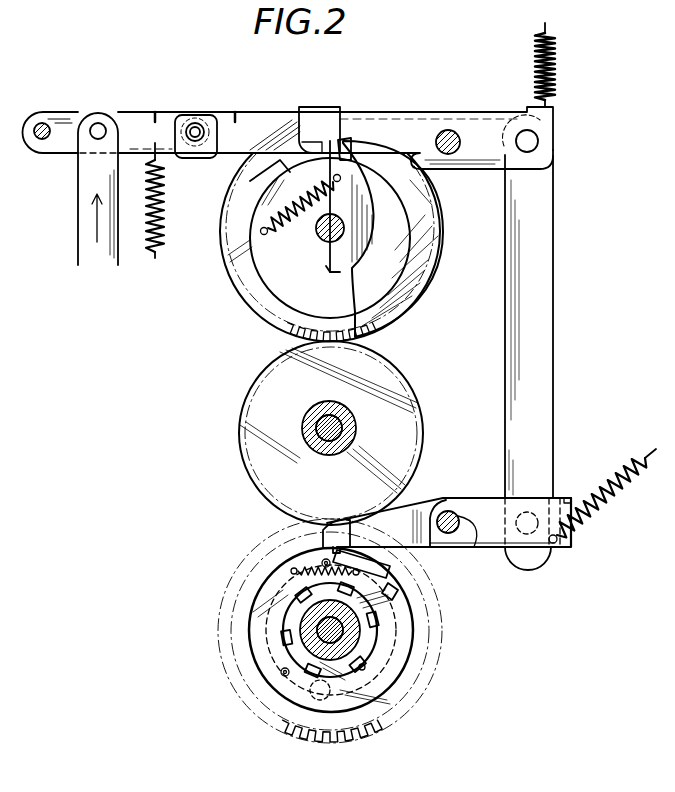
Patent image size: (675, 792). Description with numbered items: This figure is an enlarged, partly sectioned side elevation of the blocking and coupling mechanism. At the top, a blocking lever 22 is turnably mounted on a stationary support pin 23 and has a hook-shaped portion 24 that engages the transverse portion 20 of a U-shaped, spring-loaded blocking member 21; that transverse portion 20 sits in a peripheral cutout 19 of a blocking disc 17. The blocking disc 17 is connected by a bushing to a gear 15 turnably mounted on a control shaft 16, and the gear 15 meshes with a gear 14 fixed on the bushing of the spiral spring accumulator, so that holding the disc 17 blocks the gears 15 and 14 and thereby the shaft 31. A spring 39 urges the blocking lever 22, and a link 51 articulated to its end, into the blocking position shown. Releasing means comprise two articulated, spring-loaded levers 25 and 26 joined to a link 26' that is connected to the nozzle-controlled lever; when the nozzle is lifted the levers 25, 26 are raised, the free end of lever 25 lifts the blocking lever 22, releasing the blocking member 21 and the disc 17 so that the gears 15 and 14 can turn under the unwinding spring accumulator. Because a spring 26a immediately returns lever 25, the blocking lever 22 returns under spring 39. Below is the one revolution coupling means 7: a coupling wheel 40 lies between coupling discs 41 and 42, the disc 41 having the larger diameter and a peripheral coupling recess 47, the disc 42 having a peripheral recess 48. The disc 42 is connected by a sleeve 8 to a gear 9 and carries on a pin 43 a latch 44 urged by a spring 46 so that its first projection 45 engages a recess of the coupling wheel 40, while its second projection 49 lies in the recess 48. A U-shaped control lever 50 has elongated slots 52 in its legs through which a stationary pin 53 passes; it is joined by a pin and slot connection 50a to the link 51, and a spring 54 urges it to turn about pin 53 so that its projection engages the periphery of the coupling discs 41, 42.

The coupling means 7 is at (408, 698).
The sleeve 8 is at (290, 640).
The gear 9 is at (262, 712).
The gear 14 is at (410, 391).
The gear 15 is at (248, 309).
The control shaft 16 is at (320, 236).
The blocking disc 17 is at (420, 270).
The peripheral cutout 19 is at (262, 170).
The transverse portion 20 is at (346, 140).
The blocking member 21 is at (328, 273).
The blocking lever 22 is at (419, 118).
The stationary support pin 23 is at (452, 155).
The hook-shaped portion 24 is at (325, 107).
The lever 25 is at (262, 118).
The lever 26 is at (161, 115).
The link 26' is at (75, 189).
The spring 26a is at (166, 236).
The shaft 31 is at (304, 425).
The spring 39 is at (557, 74).
The coupling wheel 40 is at (322, 640).
The coupling disc 41 is at (418, 642).
The coupling disc 42 is at (412, 668).
The pin 43 is at (316, 743).
The latch 44 is at (420, 617).
The first projection 45 is at (363, 670).
The spring 46 is at (306, 586).
The peripheral coupling recess 47 is at (400, 590).
The peripheral recess 48 is at (340, 520).
The second projection 49 is at (388, 558).
The control lever 50 is at (488, 497).
The pin and slot connection 50a is at (559, 490).
The link 51 is at (552, 313).
The elongated slots 52 is at (471, 542).
The stationary pin 53 is at (445, 512).
The spring 54 is at (616, 482).